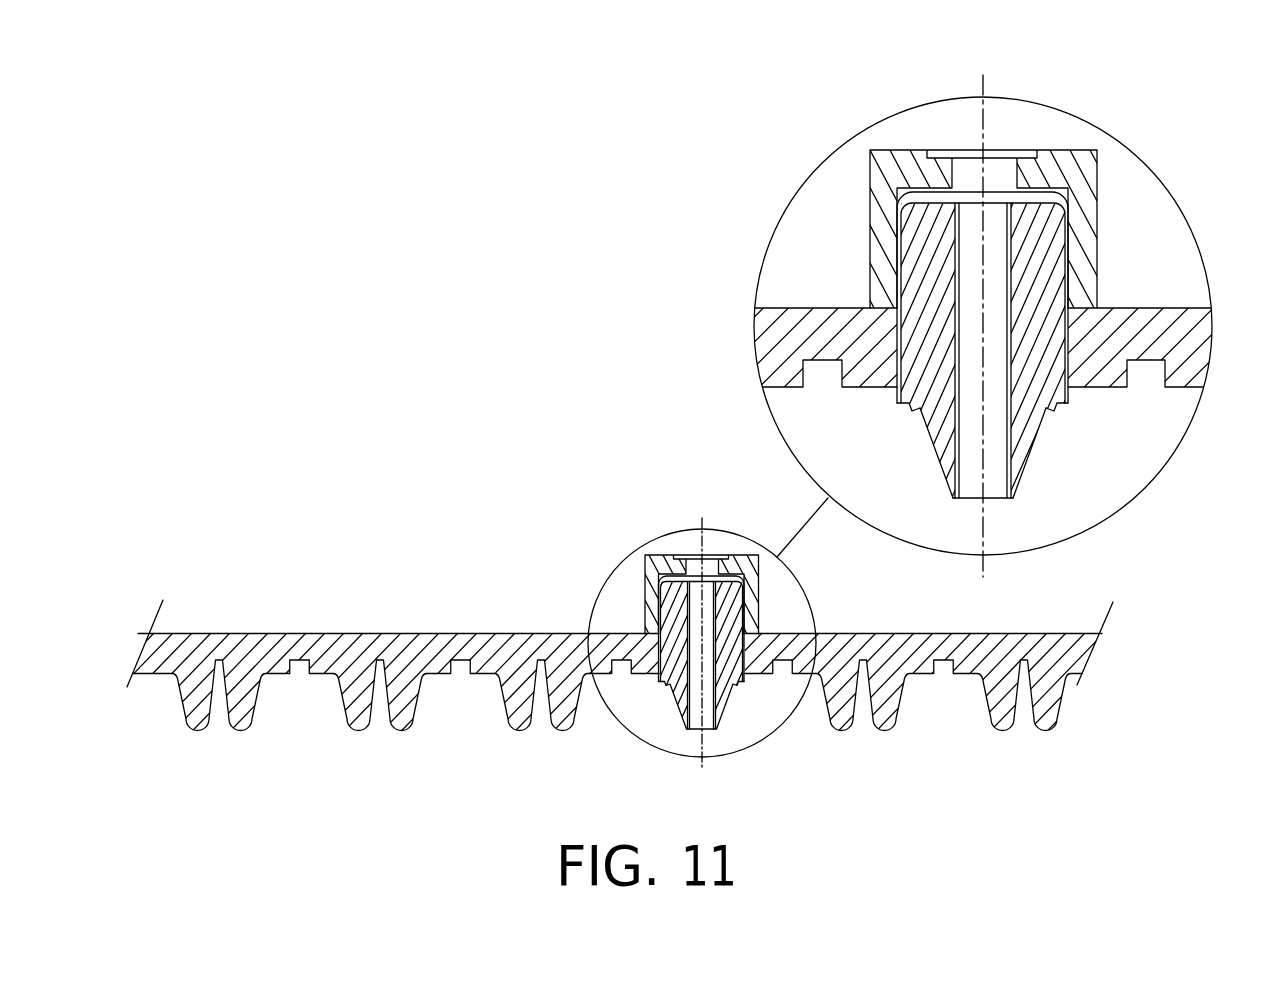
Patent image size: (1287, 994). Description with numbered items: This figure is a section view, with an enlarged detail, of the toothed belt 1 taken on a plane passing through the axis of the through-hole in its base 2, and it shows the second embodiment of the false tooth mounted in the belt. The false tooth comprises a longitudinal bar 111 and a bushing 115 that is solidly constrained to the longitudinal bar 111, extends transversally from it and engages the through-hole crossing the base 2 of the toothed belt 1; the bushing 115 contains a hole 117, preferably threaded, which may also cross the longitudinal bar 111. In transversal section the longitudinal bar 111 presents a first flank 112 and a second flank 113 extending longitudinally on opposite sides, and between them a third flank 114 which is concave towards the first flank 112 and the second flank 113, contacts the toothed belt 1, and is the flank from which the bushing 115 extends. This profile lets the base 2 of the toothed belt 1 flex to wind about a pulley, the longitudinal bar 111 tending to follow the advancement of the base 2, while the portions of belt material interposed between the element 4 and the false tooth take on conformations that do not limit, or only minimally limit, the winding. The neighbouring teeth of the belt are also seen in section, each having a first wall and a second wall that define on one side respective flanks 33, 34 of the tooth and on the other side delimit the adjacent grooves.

The toothed belt 1 is at (1040, 778).
The base 2 is at (1150, 323).
The element 4 is at (887, 187).
The flank of the tooth 33 is at (342, 690).
The flank of the tooth 34 is at (413, 693).
The longitudinal bar 111 is at (1013, 485).
The first flank 112 is at (1040, 450).
The second flank 113 is at (927, 450).
The third flank 114 is at (912, 407).
The bushing 115 is at (922, 280).
The hole 117 is at (997, 245).